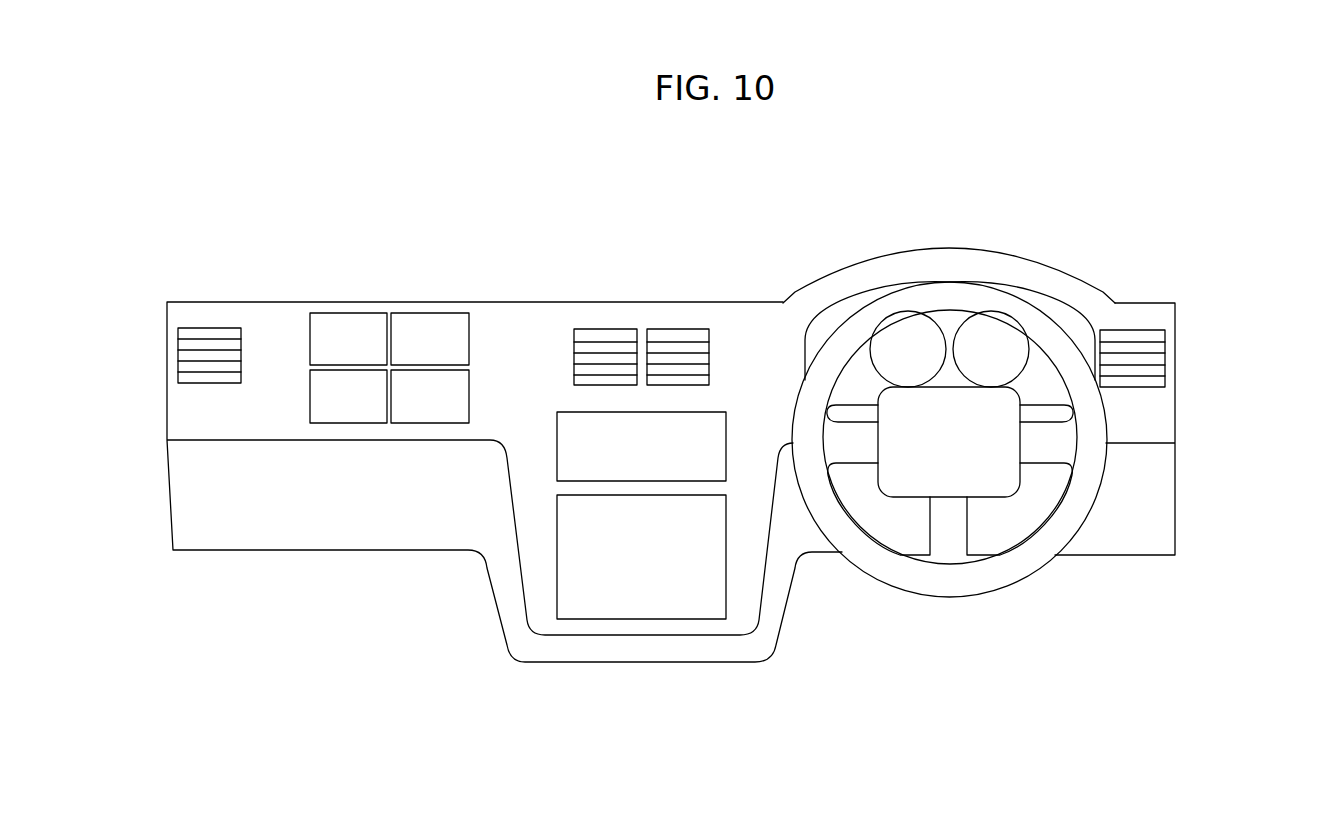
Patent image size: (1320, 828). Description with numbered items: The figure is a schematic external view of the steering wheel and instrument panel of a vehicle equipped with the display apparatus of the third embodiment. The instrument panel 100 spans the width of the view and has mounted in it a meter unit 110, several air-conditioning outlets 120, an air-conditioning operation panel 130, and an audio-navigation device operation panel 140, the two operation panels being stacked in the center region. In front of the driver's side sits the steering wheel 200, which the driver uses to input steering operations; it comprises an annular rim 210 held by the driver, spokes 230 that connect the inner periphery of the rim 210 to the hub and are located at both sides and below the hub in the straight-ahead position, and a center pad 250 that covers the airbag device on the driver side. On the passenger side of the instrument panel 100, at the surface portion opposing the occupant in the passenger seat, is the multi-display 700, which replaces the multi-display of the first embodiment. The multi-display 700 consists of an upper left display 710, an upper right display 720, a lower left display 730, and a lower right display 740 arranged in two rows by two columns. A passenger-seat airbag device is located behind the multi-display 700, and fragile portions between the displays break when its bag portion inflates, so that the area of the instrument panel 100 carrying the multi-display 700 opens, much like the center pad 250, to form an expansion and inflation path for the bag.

The instrument panel 100 is at (245, 245).
The meter unit 110 is at (853, 310).
The air-conditioning outlets 120 is at (204, 333).
The air-conditioning operation panel 130 is at (572, 437).
The audio-navigation device operation panel 140 is at (642, 598).
The steering wheel 200 is at (963, 465).
The rim 210 is at (1033, 560).
The spokes 230 is at (950, 533).
The center pad 250 is at (1007, 398).
The multi-display 700 is at (387, 402).
The upper left display 710 is at (333, 321).
The upper right display 720 is at (428, 321).
The lower left display 730 is at (343, 410).
The lower right display 740 is at (432, 410).